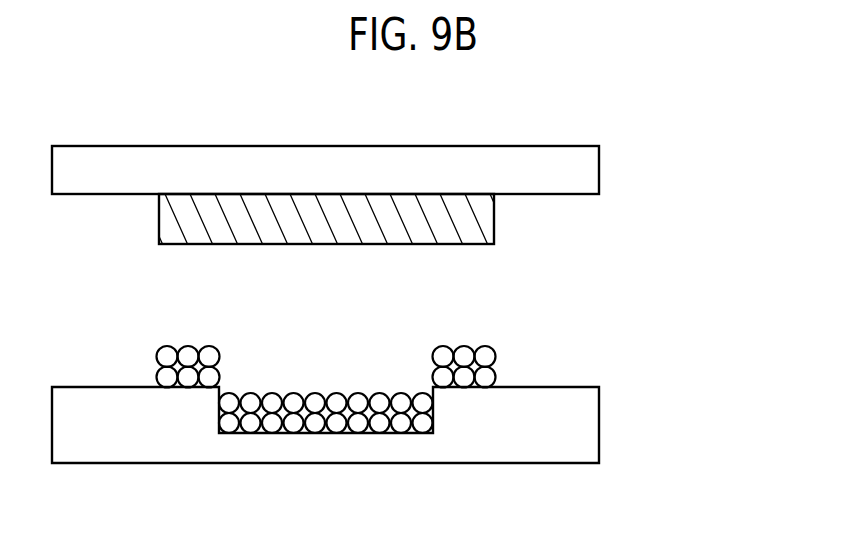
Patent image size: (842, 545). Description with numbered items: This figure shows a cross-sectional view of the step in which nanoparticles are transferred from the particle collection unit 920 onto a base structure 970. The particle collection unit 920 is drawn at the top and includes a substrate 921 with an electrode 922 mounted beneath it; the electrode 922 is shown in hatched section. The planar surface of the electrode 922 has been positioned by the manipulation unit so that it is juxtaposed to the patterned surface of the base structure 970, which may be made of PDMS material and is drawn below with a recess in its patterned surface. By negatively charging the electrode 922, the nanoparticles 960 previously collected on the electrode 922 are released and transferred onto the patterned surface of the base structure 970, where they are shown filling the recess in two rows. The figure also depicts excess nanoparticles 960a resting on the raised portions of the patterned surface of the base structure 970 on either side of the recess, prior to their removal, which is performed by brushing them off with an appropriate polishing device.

The particle collection unit 920 is at (707, 171).
The substrate 921 is at (599, 168).
The electrode 922 is at (494, 218).
The nanoparticles 960 is at (312, 399).
The excess nanoparticles 960a is at (496, 358).
The base structure 970 is at (600, 427).